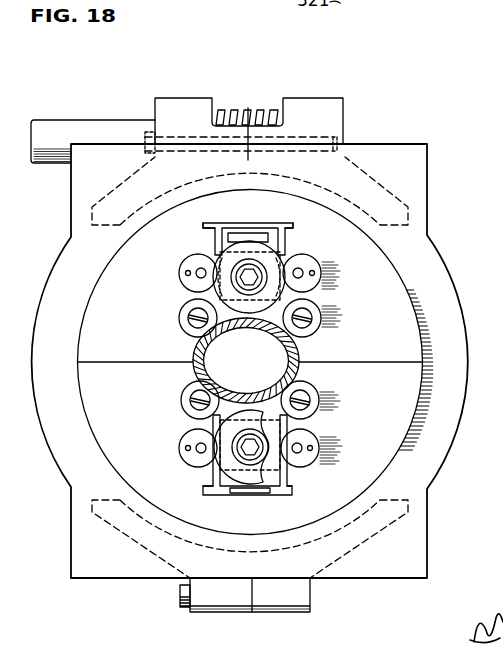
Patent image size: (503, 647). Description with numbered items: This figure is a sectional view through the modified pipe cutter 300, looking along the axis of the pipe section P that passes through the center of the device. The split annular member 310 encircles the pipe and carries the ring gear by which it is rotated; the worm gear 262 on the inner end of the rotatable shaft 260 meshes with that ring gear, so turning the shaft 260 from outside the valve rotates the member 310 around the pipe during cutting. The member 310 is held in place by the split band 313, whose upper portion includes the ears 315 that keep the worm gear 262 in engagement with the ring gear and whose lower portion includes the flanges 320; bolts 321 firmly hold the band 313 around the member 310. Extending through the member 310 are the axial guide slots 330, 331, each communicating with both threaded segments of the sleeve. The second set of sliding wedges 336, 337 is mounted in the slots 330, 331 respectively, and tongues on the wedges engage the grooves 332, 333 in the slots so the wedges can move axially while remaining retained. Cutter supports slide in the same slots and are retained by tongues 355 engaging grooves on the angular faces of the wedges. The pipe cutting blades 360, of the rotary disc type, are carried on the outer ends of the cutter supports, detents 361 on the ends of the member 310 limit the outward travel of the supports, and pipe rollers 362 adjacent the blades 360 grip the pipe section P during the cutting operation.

The rotatable shaft 260 is at (63, 118).
The worm gear 262 is at (252, 100).
The pipe cutter 300 is at (357, 142).
The split annular member 310 is at (110, 458).
The split band 313 is at (442, 434).
The ears 315 is at (177, 105).
The flanges 320 is at (311, 598).
The bolts 321 is at (147, 137).
The axial guide slot 330 is at (235, 224).
The axial guide slot 331 is at (245, 495).
The groove 332 is at (290, 231).
The groove 333 is at (292, 494).
The sliding wedge 336 is at (208, 223).
The sliding wedge 337 is at (207, 495).
The tongues 355 is at (264, 234).
The pipe cutting blades 360 is at (286, 255).
The detents 361 is at (193, 262).
The pipe rollers 362 is at (190, 312).
The central passage P is at (305, 348).